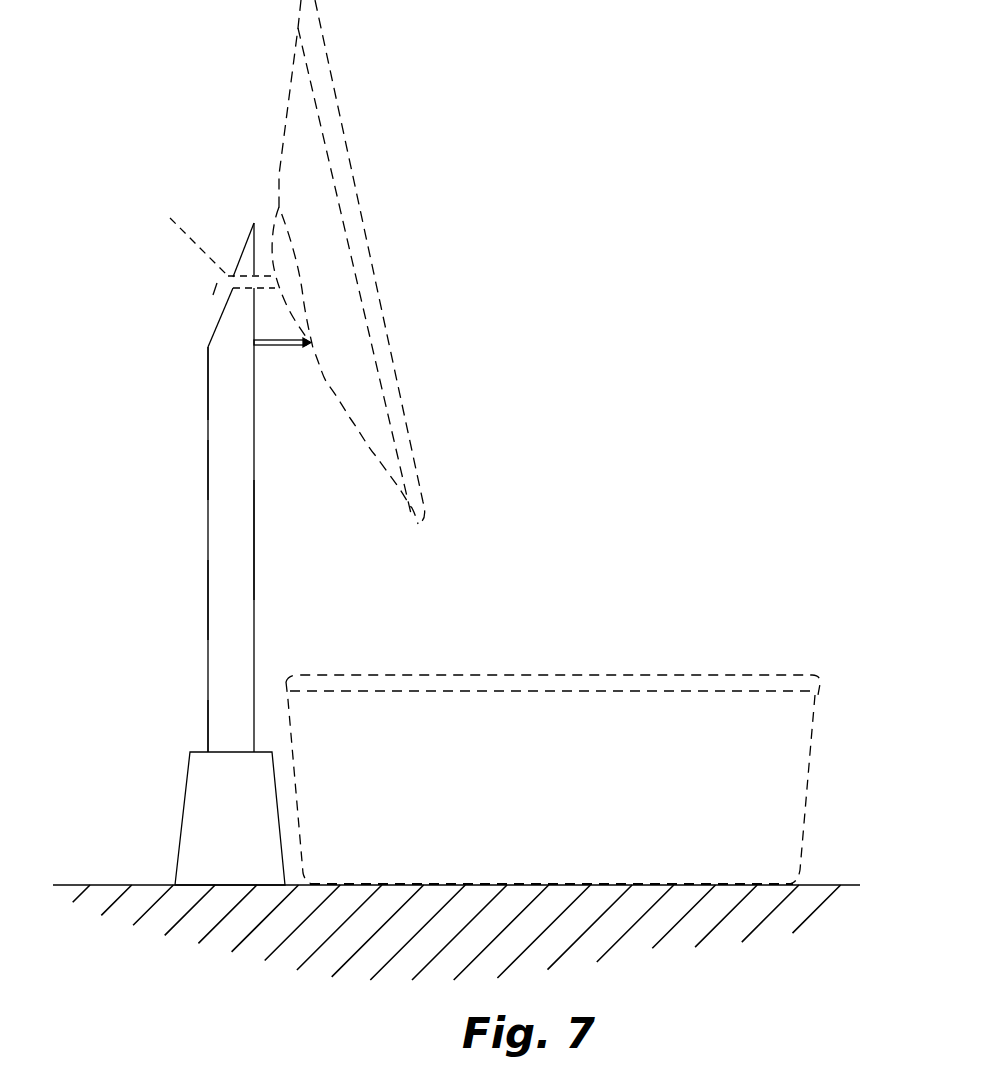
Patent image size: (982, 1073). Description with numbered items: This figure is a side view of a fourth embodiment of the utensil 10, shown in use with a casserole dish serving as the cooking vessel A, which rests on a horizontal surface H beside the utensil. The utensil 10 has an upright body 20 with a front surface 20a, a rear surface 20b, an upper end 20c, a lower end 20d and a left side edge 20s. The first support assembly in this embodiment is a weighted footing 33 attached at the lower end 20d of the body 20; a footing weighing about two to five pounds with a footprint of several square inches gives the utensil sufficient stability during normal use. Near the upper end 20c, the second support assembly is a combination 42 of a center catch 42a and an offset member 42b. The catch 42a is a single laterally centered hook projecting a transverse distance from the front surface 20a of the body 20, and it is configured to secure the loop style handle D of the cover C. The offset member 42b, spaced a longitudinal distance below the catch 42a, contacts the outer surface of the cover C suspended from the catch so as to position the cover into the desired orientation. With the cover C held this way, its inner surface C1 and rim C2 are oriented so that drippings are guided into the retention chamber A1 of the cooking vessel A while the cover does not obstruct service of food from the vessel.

The utensil 10 is at (177, 517).
The body 20 is at (208, 418).
The front surface of body 20a is at (254, 537).
The rear surface of body 20b is at (208, 466).
The upper end of body 20c is at (225, 348).
The lower end of body 20d is at (224, 745).
The left side edge of body 20s is at (222, 591).
The weighted footings 33 is at (183, 810).
The catch and offset combination 42 is at (190, 325).
The center catch 42a is at (243, 252).
The offset member 42b is at (273, 350).
The handle on cover D is at (190, 232).
The cover of cooking vessel C is at (305, 109).
The inner surface of cover C1 is at (279, 167).
The rim of cover C2 is at (341, 121).
The cooking vessel A is at (768, 842).
The retention chamber of cooking vessel A1 is at (725, 704).
The horizontal surface H is at (366, 940).